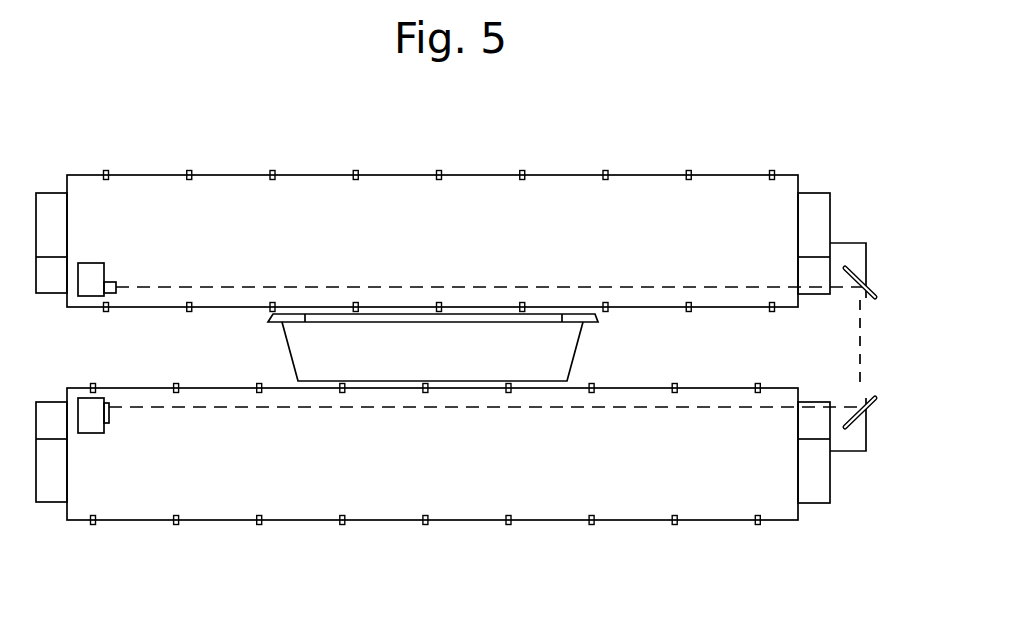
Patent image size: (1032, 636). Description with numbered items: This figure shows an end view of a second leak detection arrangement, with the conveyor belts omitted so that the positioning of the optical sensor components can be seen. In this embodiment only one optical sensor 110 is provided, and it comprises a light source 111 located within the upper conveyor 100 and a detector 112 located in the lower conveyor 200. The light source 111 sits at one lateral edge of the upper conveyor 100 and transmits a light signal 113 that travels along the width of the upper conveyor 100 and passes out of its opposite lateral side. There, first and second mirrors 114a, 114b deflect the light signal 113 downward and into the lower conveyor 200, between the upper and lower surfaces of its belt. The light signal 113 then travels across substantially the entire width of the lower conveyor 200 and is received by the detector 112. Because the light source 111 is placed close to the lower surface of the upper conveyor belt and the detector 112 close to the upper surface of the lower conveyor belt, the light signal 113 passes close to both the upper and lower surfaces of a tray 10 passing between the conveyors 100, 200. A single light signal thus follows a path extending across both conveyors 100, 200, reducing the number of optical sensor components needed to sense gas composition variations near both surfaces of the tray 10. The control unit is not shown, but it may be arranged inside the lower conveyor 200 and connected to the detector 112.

The tray 10 is at (467, 355).
The upper conveyor 100 is at (482, 162).
The optical sensor 110 is at (140, 273).
The light source 111 is at (104, 263).
The detector 112 is at (90, 433).
The light signal 113 is at (313, 407).
The first mirror 114a is at (868, 266).
The second mirror 114b is at (867, 432).
The lower conveyor 200 is at (632, 533).